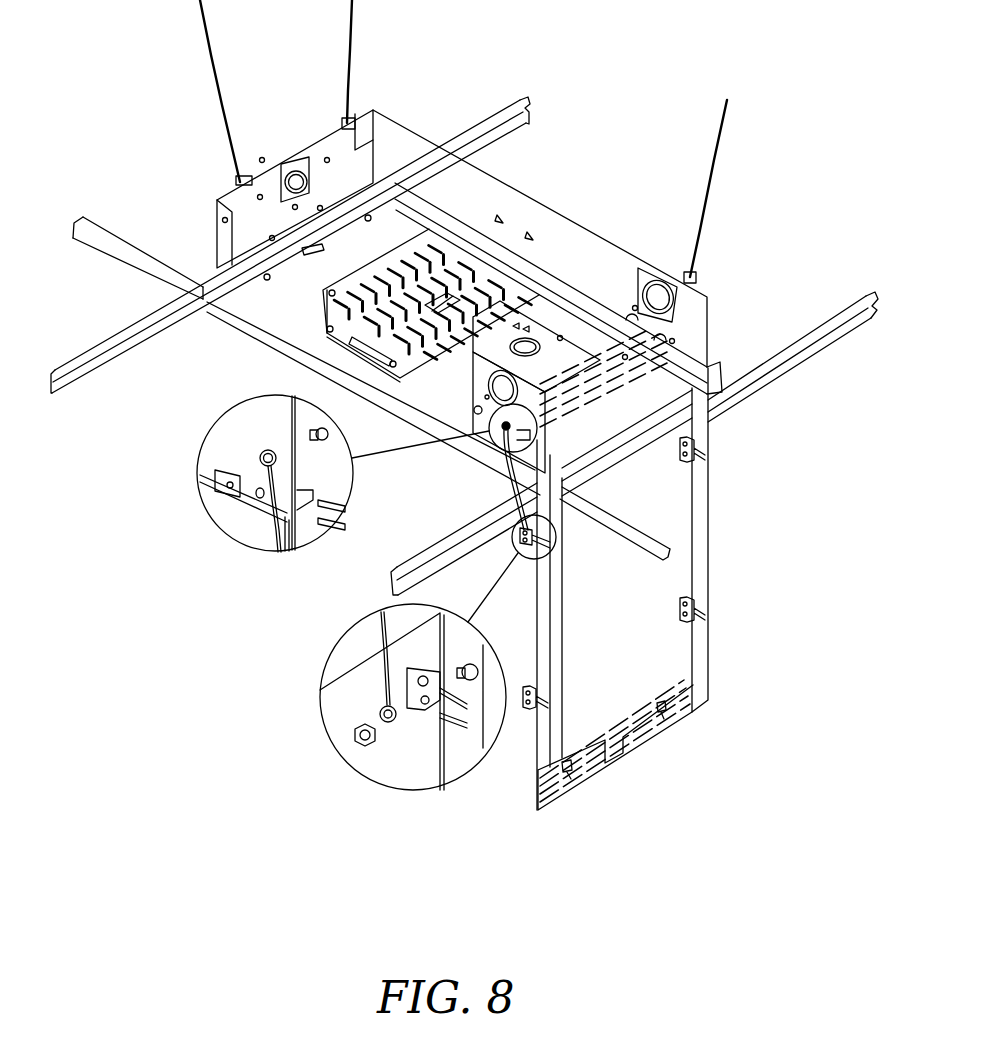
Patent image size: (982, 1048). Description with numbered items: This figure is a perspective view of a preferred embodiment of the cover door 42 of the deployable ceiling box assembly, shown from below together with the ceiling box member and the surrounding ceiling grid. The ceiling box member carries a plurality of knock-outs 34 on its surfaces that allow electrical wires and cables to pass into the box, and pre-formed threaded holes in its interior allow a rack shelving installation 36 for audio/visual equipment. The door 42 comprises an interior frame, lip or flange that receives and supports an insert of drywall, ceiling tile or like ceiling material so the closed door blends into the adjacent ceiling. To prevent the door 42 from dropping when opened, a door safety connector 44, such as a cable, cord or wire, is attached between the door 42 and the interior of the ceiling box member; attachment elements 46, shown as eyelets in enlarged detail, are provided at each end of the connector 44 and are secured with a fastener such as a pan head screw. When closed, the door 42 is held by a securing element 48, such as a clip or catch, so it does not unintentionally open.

The knock-outs 34 is at (296, 170).
The rack shelving installation 36 is at (441, 278).
The door 42 is at (704, 525).
The door safety connector 44 is at (505, 490).
The attachment elements 46 is at (256, 451).
The securing element 48 is at (659, 715).